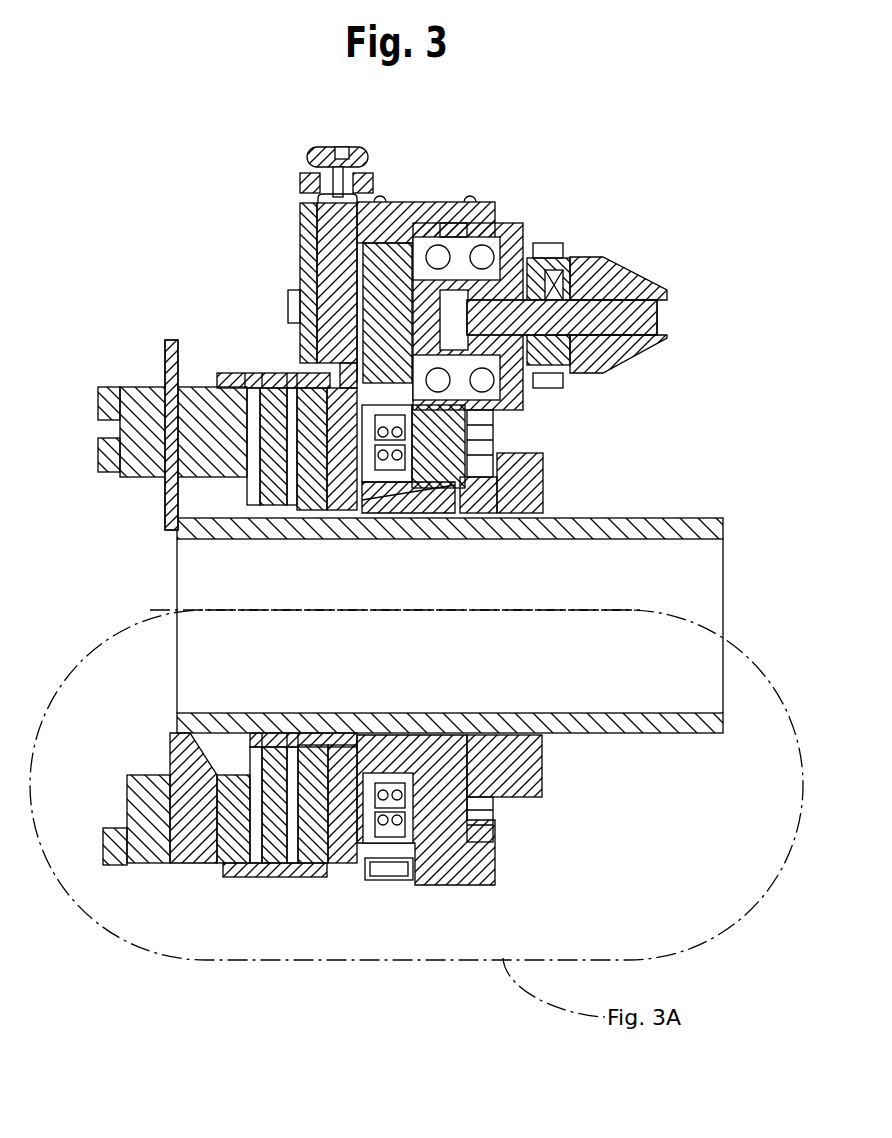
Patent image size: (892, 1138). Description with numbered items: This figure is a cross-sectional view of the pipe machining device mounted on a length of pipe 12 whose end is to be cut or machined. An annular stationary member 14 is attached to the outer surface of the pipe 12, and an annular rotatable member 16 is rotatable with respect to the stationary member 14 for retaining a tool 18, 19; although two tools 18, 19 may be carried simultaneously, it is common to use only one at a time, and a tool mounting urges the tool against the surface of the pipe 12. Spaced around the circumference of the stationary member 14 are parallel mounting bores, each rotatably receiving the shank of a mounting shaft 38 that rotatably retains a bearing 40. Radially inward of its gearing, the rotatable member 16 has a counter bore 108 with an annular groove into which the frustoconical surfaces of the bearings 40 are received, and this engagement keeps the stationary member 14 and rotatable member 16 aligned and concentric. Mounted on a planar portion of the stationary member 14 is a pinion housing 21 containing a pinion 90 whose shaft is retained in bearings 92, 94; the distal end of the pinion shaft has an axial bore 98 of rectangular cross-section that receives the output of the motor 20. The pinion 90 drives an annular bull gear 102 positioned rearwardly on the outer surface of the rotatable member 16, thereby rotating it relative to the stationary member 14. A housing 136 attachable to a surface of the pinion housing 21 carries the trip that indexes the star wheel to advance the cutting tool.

The pipe 12 is at (683, 518).
The annular stationary member 14 is at (463, 885).
The annular rotatable member 16 is at (330, 877).
The tool 18 is at (167, 501).
The tool 19 is at (170, 752).
The motor 20 is at (655, 292).
The pinion housing 21 is at (457, 240).
The mounting shaft 38 is at (455, 465).
The bearing 40 is at (318, 330).
The pinion 90 is at (397, 247).
The bearing 92 is at (500, 243).
The bearing 94 is at (517, 240).
The axial bore 98 is at (537, 310).
The annular bull gear 102 is at (395, 880).
The counter bore 108 is at (413, 843).
The housing 136 is at (297, 285).